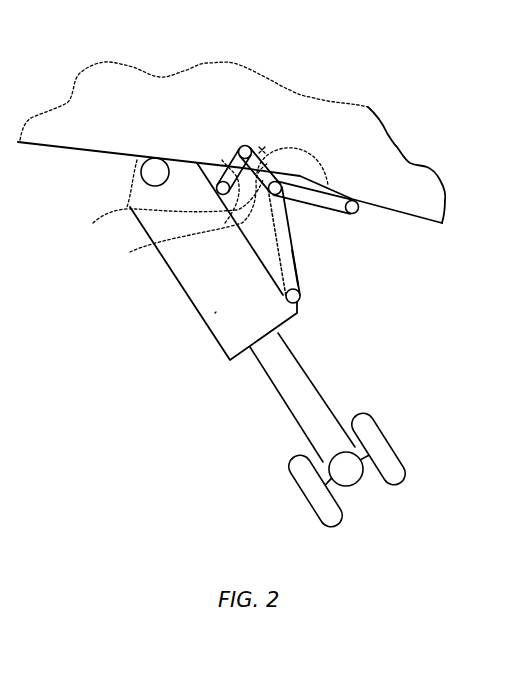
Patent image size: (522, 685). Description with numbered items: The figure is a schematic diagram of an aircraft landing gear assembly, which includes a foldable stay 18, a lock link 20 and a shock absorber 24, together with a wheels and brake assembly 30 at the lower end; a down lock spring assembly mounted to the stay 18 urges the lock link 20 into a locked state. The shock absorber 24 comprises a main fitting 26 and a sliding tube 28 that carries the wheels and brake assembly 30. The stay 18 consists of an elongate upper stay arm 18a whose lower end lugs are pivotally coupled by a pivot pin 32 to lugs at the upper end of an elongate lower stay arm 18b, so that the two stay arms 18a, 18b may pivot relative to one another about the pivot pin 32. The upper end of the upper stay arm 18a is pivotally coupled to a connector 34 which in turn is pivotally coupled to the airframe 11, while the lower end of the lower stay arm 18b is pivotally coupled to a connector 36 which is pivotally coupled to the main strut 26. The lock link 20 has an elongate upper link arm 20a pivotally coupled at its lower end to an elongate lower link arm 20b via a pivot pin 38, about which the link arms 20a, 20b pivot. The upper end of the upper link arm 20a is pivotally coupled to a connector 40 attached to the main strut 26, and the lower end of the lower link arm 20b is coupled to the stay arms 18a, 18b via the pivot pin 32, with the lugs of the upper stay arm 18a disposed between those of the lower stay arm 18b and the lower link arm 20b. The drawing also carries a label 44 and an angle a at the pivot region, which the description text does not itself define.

The airframe 11 is at (156, 124).
The foldable stay 18 is at (292, 242).
The upper stay arm 18a is at (350, 213).
The lower stay arm 18b is at (297, 267).
The lock link 20 is at (258, 153).
The upper link arm 20a is at (160, 199).
The lower link arm 20b is at (184, 217).
The shock absorber 24 is at (183, 287).
The main fitting 26 is at (216, 312).
The sliding tube 28 is at (317, 402).
The wheels and brake assembly 30 is at (301, 498).
The pivot pin 32 is at (280, 184).
The connector 34 is at (357, 203).
The connector 36 is at (295, 300).
The pivot pin 38 is at (239, 143).
The connector 40 is at (221, 147).
The gap region 44 is at (330, 282).
The angle a is at (292, 162).